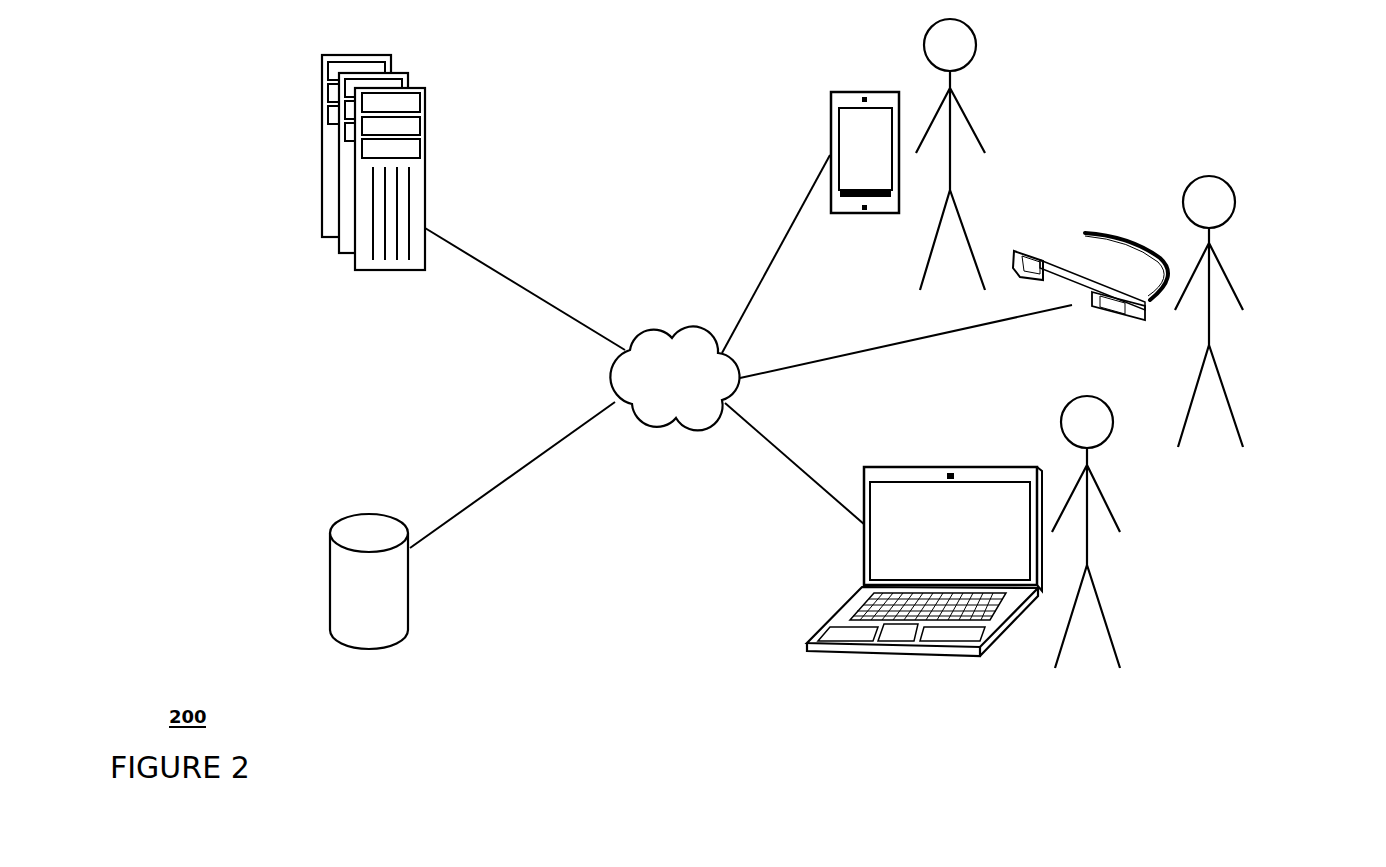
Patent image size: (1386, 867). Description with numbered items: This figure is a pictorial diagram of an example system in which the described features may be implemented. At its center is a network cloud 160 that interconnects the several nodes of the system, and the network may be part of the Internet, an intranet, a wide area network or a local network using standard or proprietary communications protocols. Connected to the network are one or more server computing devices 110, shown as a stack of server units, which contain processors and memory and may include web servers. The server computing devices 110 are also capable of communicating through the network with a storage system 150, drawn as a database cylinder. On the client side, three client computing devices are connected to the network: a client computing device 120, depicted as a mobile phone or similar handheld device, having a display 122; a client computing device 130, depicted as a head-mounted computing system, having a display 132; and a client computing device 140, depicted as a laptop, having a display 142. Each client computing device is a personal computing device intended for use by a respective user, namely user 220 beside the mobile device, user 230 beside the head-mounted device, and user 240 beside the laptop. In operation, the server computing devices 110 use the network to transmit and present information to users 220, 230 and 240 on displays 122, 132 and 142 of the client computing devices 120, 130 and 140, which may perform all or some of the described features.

The computing device 110 is at (430, 128).
The client computing device 120 is at (812, 152).
The display 122 is at (840, 150).
The client computing device 130 is at (1090, 269).
The display 132 is at (1135, 318).
The client computing device 140 is at (898, 561).
The display 142 is at (868, 570).
The storage system 150 is at (410, 598).
The network 160 is at (741, 351).
The user 220 is at (983, 150).
The user 230 is at (1243, 305).
The user 240 is at (1115, 520).